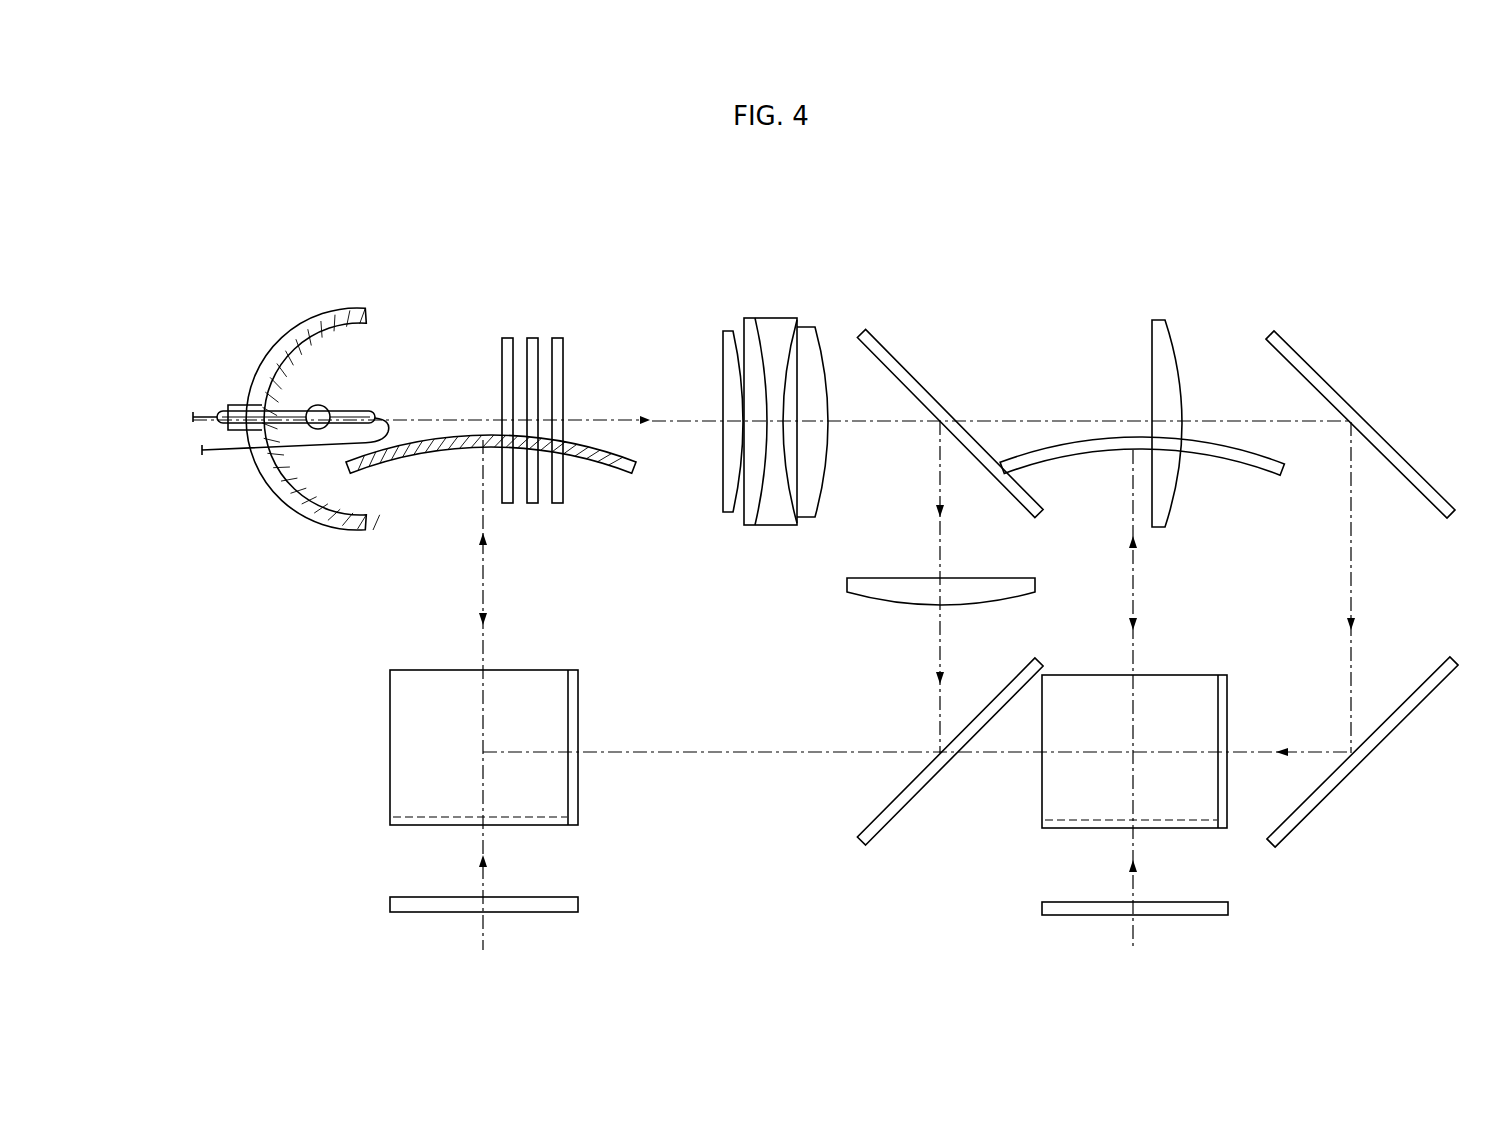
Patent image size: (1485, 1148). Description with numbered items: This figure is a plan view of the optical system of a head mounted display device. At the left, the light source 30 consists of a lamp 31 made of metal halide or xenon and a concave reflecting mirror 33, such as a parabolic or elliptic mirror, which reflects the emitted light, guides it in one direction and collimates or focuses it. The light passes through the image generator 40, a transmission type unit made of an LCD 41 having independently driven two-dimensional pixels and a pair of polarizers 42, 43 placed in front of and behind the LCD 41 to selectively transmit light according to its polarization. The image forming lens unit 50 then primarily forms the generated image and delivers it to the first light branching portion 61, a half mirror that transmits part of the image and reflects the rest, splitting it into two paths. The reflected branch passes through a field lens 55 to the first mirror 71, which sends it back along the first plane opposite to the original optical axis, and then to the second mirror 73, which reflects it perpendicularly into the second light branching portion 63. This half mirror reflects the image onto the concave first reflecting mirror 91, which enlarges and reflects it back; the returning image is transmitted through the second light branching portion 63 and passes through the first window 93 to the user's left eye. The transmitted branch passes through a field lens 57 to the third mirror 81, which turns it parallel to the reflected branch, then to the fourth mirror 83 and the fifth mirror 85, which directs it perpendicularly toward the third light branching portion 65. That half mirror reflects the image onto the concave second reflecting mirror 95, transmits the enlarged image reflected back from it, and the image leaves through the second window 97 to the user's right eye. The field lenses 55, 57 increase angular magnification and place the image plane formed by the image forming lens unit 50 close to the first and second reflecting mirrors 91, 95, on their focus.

The light source 30 is at (258, 316).
The lamp 31 is at (327, 407).
The concave reflecting mirror 33 is at (318, 327).
The image generator 40 is at (560, 258).
The transmission type LCD 41 is at (533, 337).
The polarizer 42 is at (508, 337).
The polarizer 43 is at (558, 337).
The image forming lens unit 50 is at (817, 324).
The field lens 55 is at (888, 603).
The field lens 57 is at (1157, 318).
The first light branching portion 61 is at (883, 345).
The second light branching portion 63 is at (553, 818).
The third light branching portion 65 is at (1205, 822).
The first mirror 71 is at (910, 805).
The second mirror 73 is at (573, 685).
The third mirror 81 is at (1297, 345).
The fourth mirror 83 is at (1320, 807).
The fifth mirror 85 is at (1223, 687).
The first reflecting mirror 91 is at (592, 465).
The first window 93 is at (390, 902).
The second reflecting mirror 95 is at (1253, 463).
The second window 97 is at (1042, 907).